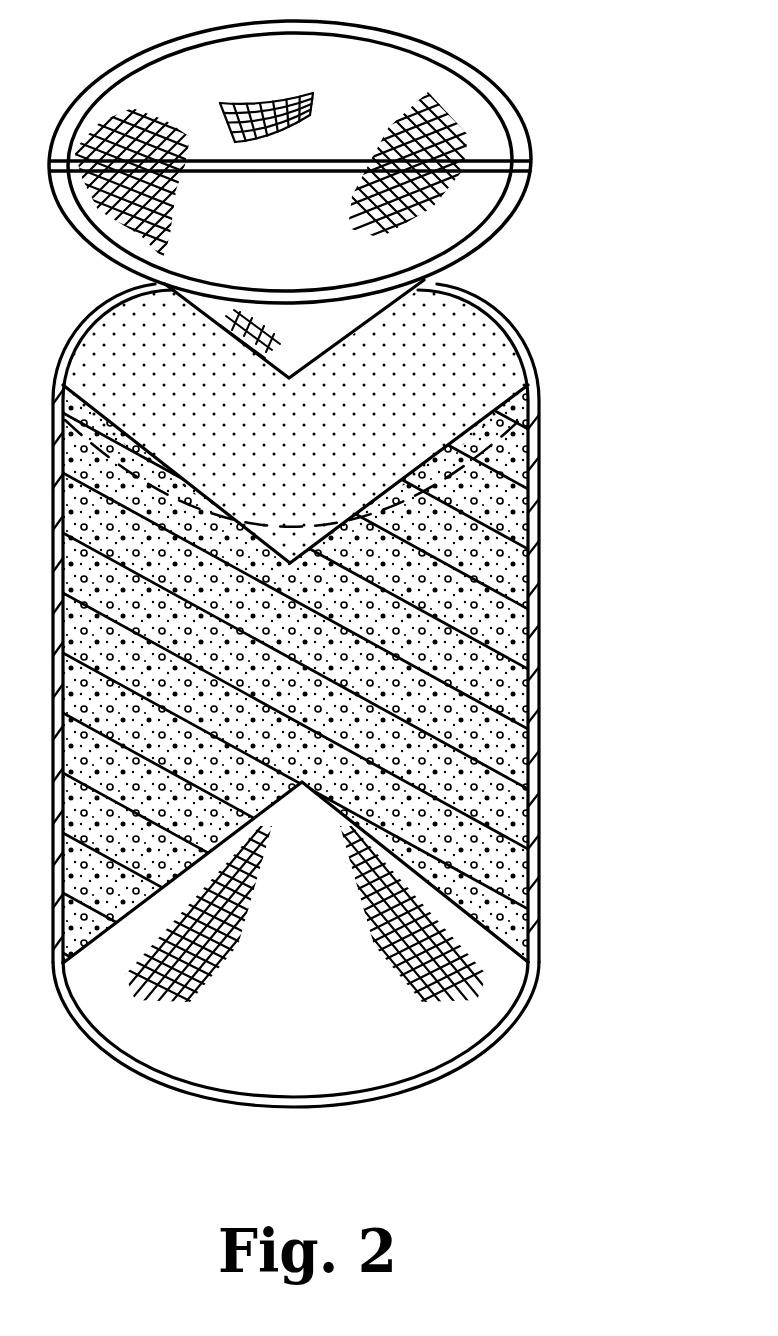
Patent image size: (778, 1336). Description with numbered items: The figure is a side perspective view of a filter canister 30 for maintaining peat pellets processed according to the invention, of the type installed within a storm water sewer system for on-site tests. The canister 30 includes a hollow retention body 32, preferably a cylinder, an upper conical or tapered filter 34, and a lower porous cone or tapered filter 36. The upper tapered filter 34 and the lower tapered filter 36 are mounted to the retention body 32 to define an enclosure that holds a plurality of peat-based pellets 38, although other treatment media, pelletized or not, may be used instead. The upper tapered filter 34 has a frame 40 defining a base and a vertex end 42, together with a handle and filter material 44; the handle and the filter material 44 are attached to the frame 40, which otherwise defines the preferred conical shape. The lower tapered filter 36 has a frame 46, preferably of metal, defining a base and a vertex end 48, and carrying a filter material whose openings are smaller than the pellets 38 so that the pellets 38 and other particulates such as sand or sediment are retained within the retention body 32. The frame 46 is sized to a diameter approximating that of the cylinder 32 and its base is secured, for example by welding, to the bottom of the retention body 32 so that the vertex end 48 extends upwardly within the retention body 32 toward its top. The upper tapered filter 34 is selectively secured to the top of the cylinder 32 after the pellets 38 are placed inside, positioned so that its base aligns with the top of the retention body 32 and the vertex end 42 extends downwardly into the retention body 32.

The filter canister 30 is at (621, 76).
The retention body 32 is at (543, 591).
The upper tapered filter 34 is at (472, 68).
The lower tapered filter 36 is at (493, 998).
The peat-based pellets 38 is at (447, 720).
The frame 40 is at (512, 204).
The vertex end 42 is at (473, 163).
The filter material 44 is at (310, 100).
The frame 46 is at (348, 1095).
The vertex end 48 is at (198, 995).